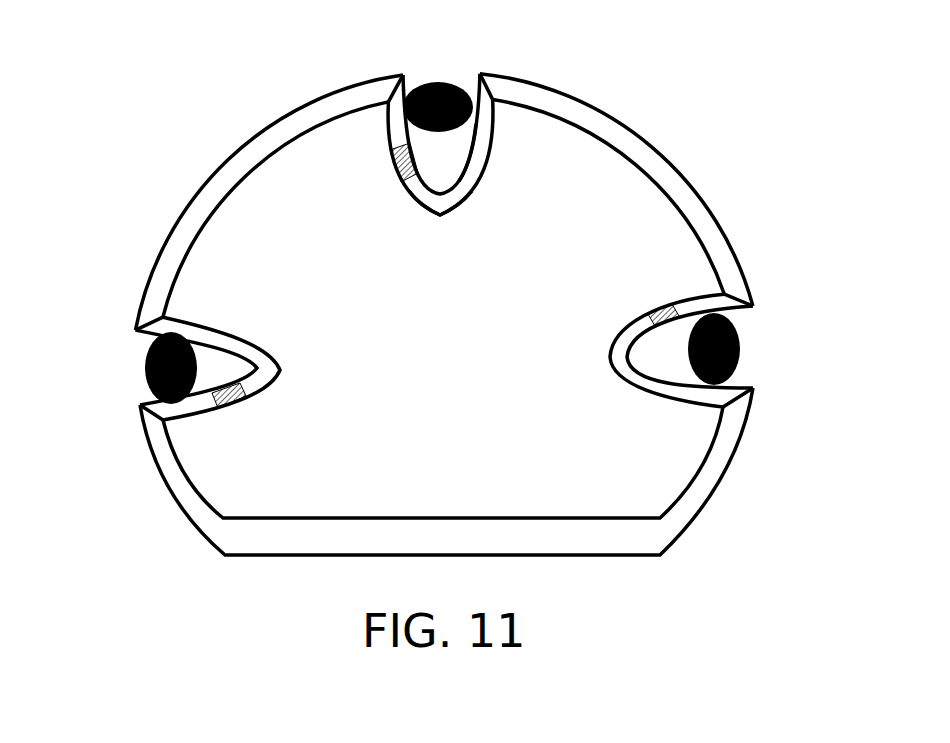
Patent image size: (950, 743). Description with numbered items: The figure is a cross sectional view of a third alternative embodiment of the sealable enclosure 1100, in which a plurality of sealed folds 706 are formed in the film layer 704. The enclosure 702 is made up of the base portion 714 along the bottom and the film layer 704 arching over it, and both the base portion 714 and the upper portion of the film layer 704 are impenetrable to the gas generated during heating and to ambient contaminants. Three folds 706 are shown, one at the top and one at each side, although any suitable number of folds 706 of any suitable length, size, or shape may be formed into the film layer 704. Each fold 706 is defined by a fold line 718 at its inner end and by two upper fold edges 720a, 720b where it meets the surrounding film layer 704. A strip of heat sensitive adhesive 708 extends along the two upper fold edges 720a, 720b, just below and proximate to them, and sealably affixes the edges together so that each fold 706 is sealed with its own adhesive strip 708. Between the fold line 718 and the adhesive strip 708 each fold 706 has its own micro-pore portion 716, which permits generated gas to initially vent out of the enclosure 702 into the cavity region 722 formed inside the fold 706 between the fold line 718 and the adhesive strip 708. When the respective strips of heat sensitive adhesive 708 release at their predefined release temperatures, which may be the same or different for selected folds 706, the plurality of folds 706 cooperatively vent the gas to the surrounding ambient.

The sealable enclosure 1100 is at (728, 78).
The enclosure 702 is at (800, 170).
The film layer 704 is at (253, 130).
The fold 706 is at (505, 250).
The strip of heat sensitive adhesive 708 is at (443, 82).
The base portion 714 is at (243, 557).
The micro-pore portion 716 is at (396, 170).
The fold line 718 is at (442, 215).
The upper fold edge 720a is at (390, 88).
The upper fold edge 720b is at (487, 85).
The cavity region 722 is at (447, 158).